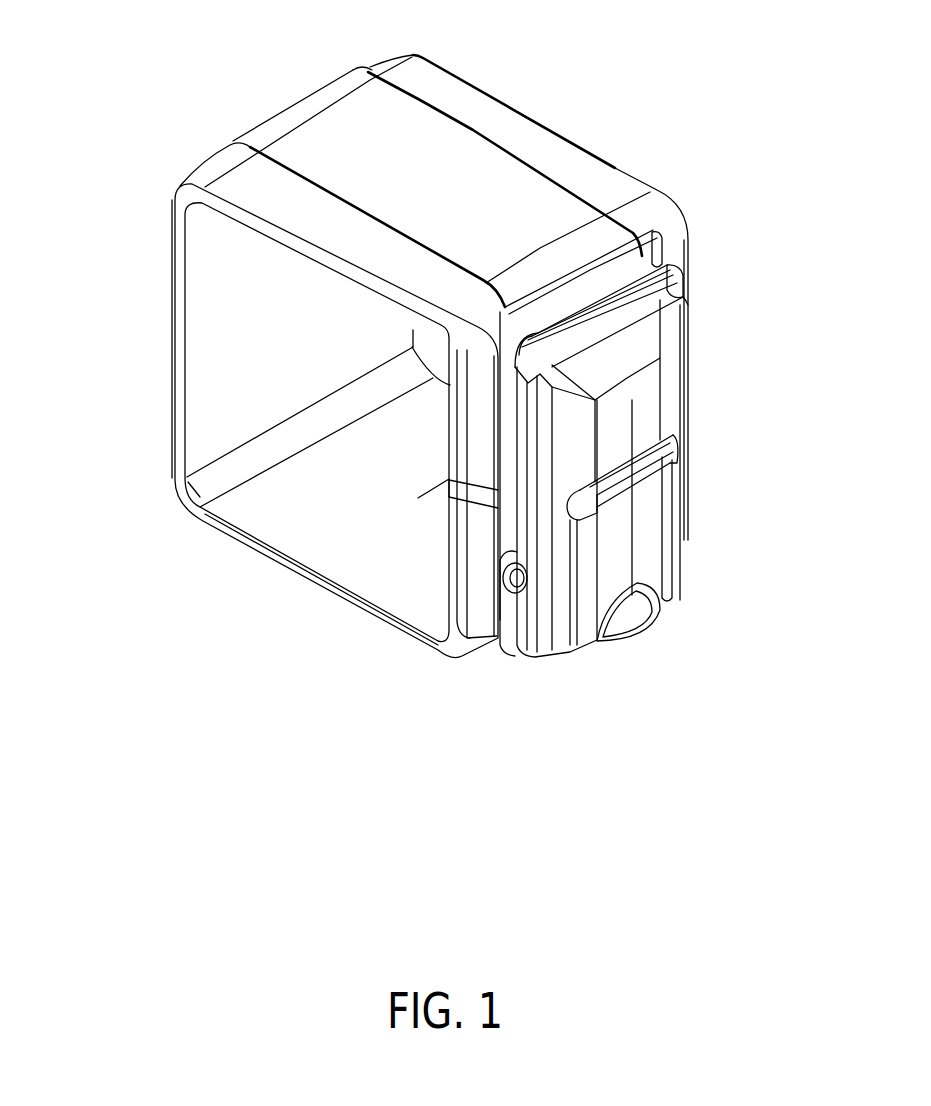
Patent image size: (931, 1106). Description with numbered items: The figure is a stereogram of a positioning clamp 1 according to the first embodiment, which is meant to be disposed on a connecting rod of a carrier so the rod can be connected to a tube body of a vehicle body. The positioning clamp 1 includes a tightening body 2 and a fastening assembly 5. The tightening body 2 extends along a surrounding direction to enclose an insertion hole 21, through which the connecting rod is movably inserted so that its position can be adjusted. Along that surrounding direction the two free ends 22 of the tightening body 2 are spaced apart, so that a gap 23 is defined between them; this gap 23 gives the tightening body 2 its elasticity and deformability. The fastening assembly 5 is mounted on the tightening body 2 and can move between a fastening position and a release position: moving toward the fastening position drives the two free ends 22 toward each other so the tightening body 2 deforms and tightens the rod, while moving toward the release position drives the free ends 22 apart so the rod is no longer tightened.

The positioning clamp 1 is at (154, 118).
The tightening body 2 is at (455, 157).
The insertion hole 21 is at (355, 507).
The free ends 22 is at (475, 437).
The gap 23 is at (473, 500).
The fastening assembly 5 is at (650, 408).